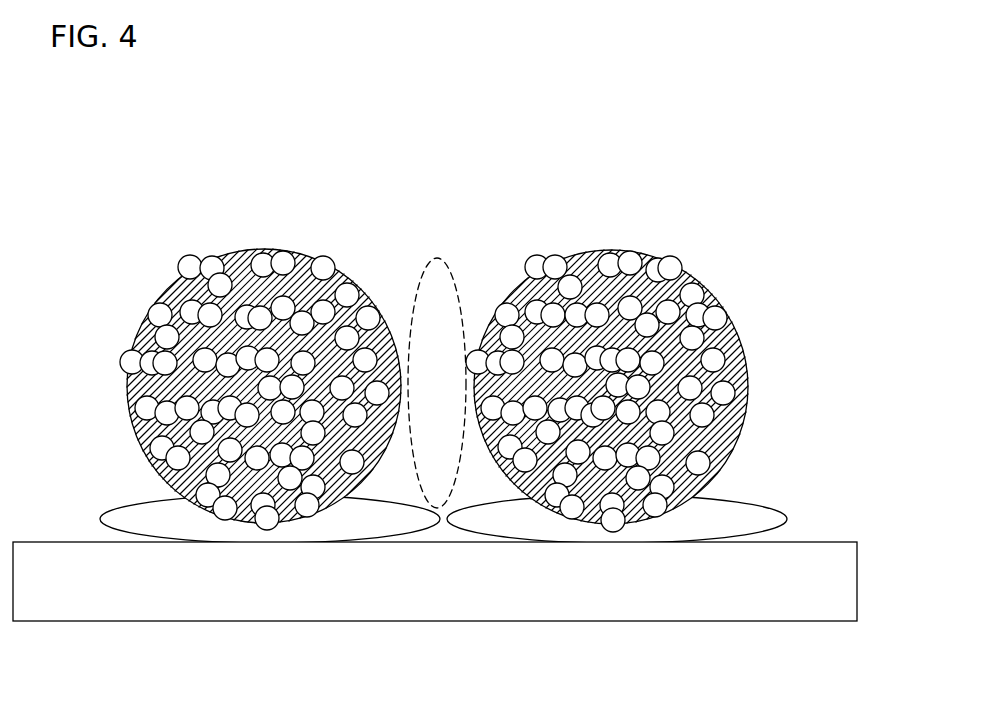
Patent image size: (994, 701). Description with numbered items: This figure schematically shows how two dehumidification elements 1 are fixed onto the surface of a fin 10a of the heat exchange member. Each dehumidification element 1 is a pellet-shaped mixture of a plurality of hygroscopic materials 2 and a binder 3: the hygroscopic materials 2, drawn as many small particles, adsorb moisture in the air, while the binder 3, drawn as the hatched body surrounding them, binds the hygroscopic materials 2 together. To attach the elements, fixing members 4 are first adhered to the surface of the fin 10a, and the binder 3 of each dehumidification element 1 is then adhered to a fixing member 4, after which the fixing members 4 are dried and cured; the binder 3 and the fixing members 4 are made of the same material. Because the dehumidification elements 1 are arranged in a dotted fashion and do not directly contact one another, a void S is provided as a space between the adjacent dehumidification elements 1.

The dehumidification element 1 is at (150, 303).
The hygroscopic material 2 is at (184, 260).
The binder 3 is at (249, 250).
The fixing member 4 is at (103, 512).
The void S is at (430, 262).
The fin 10a is at (808, 541).